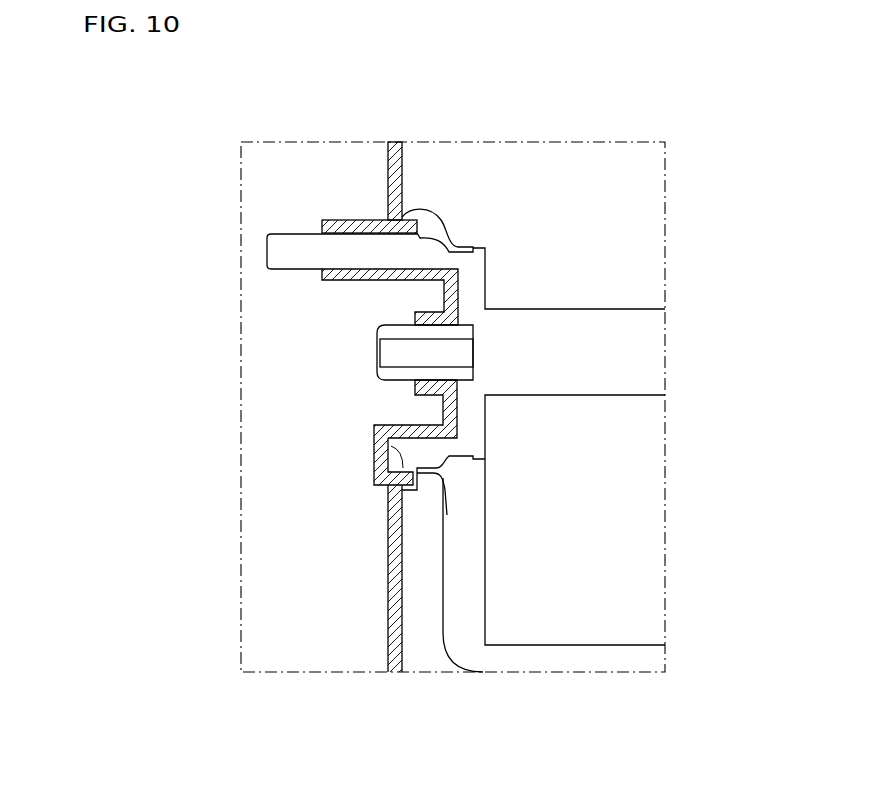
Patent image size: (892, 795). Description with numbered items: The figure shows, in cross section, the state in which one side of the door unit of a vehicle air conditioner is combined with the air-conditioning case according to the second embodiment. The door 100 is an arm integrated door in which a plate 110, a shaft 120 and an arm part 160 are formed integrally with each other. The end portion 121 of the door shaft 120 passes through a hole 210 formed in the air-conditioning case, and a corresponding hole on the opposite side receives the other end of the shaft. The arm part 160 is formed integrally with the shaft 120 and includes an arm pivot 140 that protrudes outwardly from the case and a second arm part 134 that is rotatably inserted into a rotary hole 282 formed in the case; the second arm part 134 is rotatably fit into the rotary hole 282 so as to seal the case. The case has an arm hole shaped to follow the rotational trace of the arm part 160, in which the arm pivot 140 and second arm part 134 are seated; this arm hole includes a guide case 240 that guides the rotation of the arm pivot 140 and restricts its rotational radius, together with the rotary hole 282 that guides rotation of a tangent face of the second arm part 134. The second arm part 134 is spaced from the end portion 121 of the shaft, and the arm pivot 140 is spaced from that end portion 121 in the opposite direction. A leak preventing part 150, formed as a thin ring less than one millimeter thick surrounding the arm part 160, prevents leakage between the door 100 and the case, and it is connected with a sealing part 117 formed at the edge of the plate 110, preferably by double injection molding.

The door 100 is at (592, 297).
The plate 110 is at (613, 580).
The sealing part 117 is at (453, 632).
The door shaft 120 is at (610, 360).
The end portion of the door shaft 121 is at (396, 352).
The second arm part 134 is at (395, 443).
The arm pivot 140 is at (268, 255).
The leak preventing part 150 is at (428, 228).
The arm part 160 is at (281, 351).
The hole 210 is at (393, 632).
The guide case 240 is at (343, 237).
The rotary hole 282 is at (376, 462).